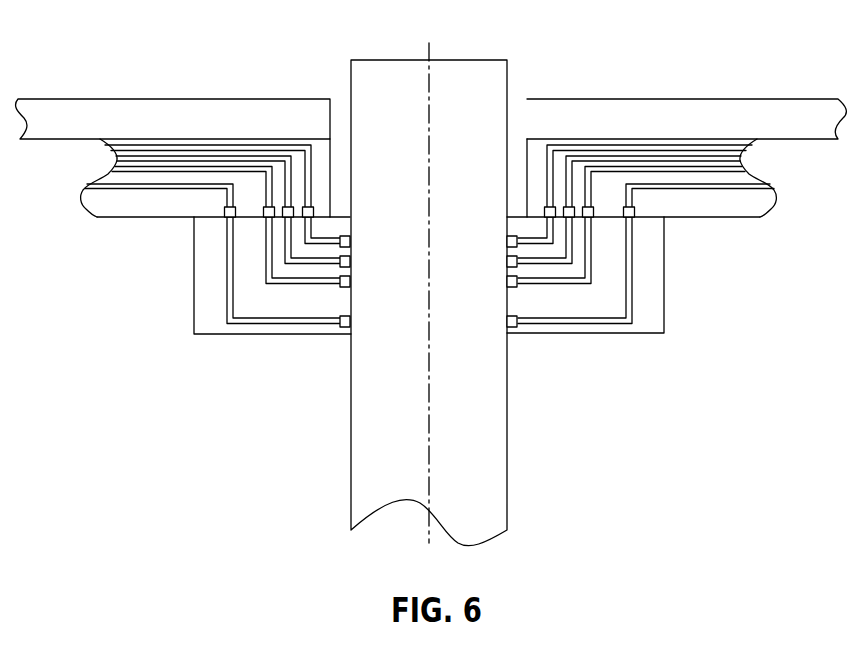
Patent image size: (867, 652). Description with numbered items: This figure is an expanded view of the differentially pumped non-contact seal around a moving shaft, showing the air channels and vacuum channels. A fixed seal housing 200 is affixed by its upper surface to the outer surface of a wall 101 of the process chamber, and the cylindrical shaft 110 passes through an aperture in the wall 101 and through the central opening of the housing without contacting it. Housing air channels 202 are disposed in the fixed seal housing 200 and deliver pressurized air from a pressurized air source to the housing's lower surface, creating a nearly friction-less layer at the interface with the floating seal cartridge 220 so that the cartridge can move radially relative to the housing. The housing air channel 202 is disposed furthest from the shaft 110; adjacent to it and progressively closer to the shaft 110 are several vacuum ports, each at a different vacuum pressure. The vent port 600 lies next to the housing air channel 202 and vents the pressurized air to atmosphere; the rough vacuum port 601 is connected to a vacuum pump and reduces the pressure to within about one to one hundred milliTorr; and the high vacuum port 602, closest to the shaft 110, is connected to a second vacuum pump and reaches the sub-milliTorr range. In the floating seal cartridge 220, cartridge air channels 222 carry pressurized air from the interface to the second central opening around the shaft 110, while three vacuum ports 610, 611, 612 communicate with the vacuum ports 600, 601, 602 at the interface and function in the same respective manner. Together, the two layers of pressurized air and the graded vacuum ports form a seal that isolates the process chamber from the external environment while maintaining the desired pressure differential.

The wall 101 is at (287, 99).
The shaft 110 is at (483, 490).
The fixed seal housing 200 is at (172, 212).
The housing air channels 202 is at (110, 192).
The floating seal cartridge 220 is at (268, 329).
The cartridge air channels 222 is at (542, 320).
The vent port 600 is at (590, 172).
The rough vacuum port 601 is at (285, 183).
The high vacuum port 602 is at (553, 183).
The vacuum port 610 is at (270, 238).
The vacuum port 611 is at (562, 260).
The vacuum port 612 is at (330, 242).